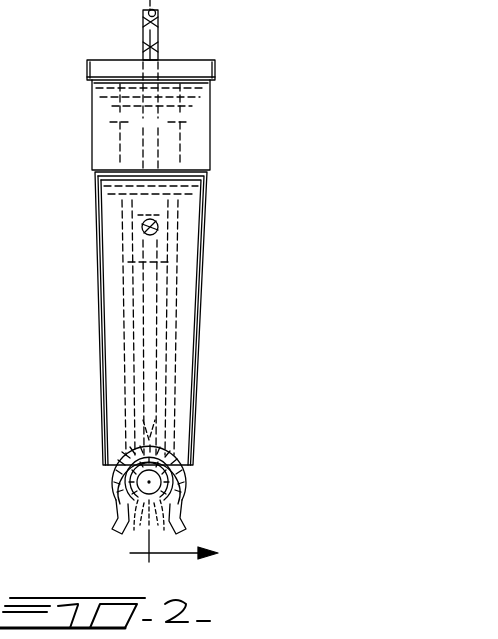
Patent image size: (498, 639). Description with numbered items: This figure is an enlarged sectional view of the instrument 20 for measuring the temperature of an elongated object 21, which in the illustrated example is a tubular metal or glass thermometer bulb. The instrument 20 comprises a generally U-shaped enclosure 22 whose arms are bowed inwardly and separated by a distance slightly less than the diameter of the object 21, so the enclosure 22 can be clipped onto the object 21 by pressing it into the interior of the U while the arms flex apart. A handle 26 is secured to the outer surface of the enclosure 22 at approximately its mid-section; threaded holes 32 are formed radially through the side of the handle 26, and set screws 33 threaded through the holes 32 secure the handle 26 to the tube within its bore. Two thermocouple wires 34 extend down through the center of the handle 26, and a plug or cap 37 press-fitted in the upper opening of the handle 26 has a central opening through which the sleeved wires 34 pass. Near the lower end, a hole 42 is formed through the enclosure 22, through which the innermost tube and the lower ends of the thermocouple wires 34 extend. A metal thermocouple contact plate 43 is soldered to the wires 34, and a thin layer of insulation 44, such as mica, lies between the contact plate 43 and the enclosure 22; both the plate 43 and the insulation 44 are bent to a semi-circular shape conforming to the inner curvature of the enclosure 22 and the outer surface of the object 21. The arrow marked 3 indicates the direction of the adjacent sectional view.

The instrument 20 is at (86, 246).
The elongated object 21 is at (178, 497).
The U shaped enclosure 22 is at (120, 478).
The handle 26 is at (205, 213).
The threaded holes 32 is at (142, 218).
The set screws 33 is at (147, 233).
The thermocouple wires 34 is at (160, 20).
The plug or cap 37 is at (103, 59).
The hole 42 is at (167, 430).
The thermocouple contact plate 43 is at (165, 467).
The insulation layer 44 is at (114, 474).
The section line for FIG. 3 is at (172, 555).